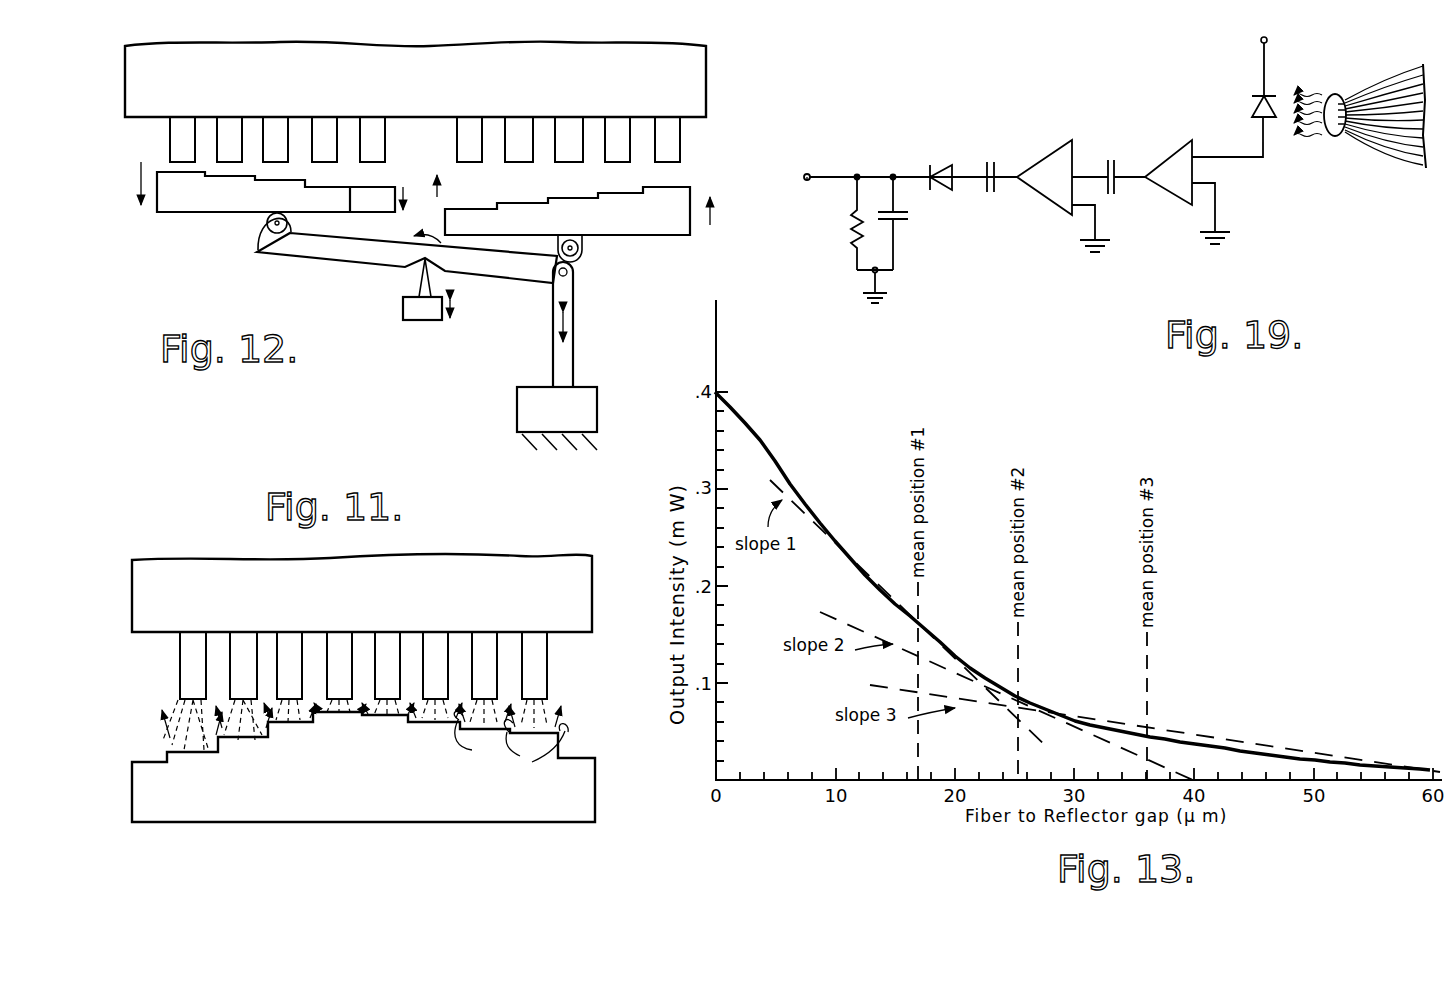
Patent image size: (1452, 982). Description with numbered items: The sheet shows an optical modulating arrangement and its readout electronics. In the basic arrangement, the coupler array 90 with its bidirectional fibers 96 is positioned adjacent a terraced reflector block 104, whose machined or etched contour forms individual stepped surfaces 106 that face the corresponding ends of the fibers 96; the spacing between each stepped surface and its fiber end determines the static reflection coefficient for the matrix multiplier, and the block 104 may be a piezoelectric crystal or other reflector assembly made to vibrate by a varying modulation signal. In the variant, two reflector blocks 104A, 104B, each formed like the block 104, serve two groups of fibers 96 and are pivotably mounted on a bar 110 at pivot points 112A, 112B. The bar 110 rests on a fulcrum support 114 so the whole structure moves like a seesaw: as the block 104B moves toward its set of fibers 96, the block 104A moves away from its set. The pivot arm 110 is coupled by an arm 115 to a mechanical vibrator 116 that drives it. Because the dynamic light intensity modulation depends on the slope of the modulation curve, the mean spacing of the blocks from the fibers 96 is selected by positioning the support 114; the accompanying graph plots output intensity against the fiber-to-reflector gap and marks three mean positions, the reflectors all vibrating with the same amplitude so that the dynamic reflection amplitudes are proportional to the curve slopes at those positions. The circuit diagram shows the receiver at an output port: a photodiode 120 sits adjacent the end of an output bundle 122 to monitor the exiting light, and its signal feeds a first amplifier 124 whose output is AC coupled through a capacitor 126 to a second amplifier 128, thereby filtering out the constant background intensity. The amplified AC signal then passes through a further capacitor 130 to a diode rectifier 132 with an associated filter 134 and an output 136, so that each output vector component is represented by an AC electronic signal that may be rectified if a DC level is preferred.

In FIG. 12, the coupler array 90 is at (710, 78).
In FIG. 11, the coupler array 90 is at (530, 549).
In FIG. 12, the bidirectional fibers 96 is at (388, 149).
In FIG. 11, the bidirectional fibers 96 is at (547, 685).
In FIG. 11, the terraced reflector block 104 is at (596, 792).
In FIG. 12, the reflector block 104A is at (216, 213).
In FIG. 12, the reflector block 104B is at (631, 236).
In FIG. 11, the stepped surfaces 106 is at (511, 745).
In FIG. 12, the bar 110 is at (503, 279).
In FIG. 12, the pivot point 112A is at (283, 236).
In FIG. 12, the pivot point 112B is at (585, 256).
In FIG. 12, the fulcrum support 114 is at (400, 308).
In FIG. 12, the arm 115 is at (574, 361).
In FIG. 12, the mechanical vibrator 116 is at (597, 404).
In FIG. 19, the photodiode 120 is at (1256, 100).
In FIG. 19, the output bundle 122 is at (1334, 93).
In FIG. 19, the first amplifier 124 is at (1168, 184).
In FIG. 19, the capacitor 126 is at (1116, 159).
In FIG. 19, the second amplifier 128 is at (1048, 163).
In FIG. 19, the further capacitor 130 is at (986, 190).
In FIG. 19, the diode rectifier 132 is at (934, 168).
In FIG. 19, the filter 134 is at (907, 232).
In FIG. 19, the output 136 is at (806, 184).